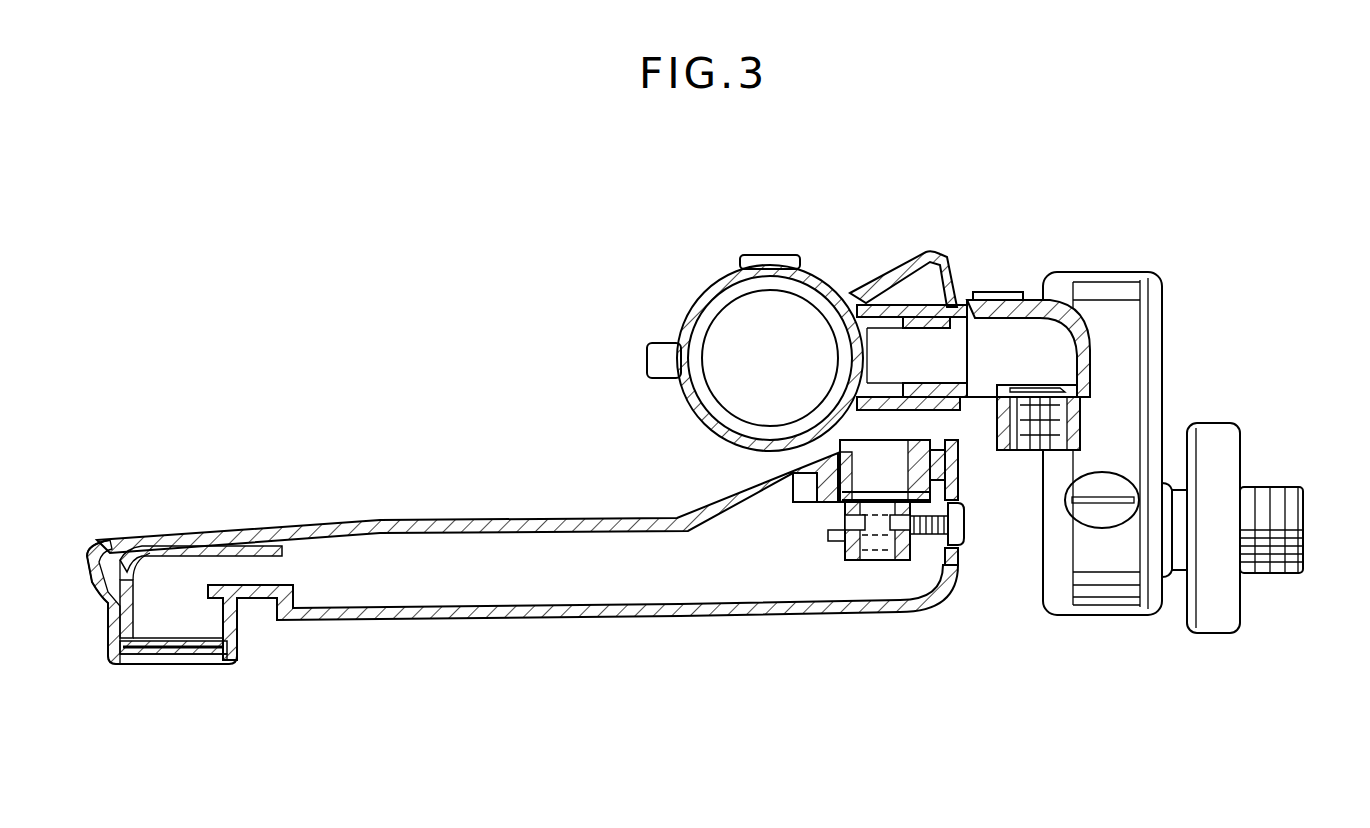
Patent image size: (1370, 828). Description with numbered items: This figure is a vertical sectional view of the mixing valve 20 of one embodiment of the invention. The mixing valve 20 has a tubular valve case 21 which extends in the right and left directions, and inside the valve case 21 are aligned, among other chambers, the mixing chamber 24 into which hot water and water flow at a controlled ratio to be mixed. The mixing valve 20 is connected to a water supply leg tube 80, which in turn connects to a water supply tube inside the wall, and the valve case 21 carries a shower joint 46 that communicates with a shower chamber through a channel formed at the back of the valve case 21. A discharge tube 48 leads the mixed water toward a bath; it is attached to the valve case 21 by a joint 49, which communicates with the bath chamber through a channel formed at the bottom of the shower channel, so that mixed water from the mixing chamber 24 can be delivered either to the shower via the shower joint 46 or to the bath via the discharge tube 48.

The mixing valve 20 is at (650, 306).
The tubular valve case 21 is at (726, 281).
The mixing chamber 24 is at (800, 312).
The shower joint 46 is at (1032, 332).
The discharge tube 48 is at (466, 619).
The joint 49 is at (887, 477).
The water supply leg tube 80 is at (1140, 380).